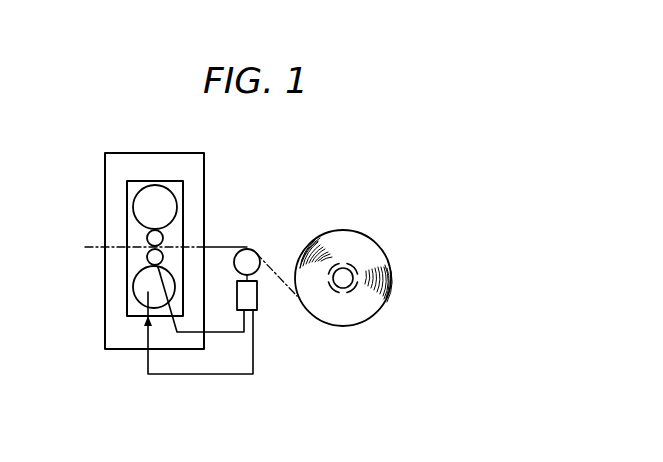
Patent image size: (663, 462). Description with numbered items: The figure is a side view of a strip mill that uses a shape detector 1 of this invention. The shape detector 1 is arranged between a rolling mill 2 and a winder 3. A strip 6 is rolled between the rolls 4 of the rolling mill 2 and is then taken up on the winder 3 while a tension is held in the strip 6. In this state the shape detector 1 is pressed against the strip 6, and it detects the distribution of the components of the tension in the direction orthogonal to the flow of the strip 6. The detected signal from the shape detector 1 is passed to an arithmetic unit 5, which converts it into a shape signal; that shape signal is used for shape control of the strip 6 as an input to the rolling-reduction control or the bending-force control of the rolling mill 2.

The shape detector 1 is at (250, 260).
The rolling mill 2 is at (148, 152).
The winder 3 is at (342, 285).
The rolls 4 is at (149, 236).
The arithmetic unit 5 is at (251, 297).
The strip 6 is at (221, 246).